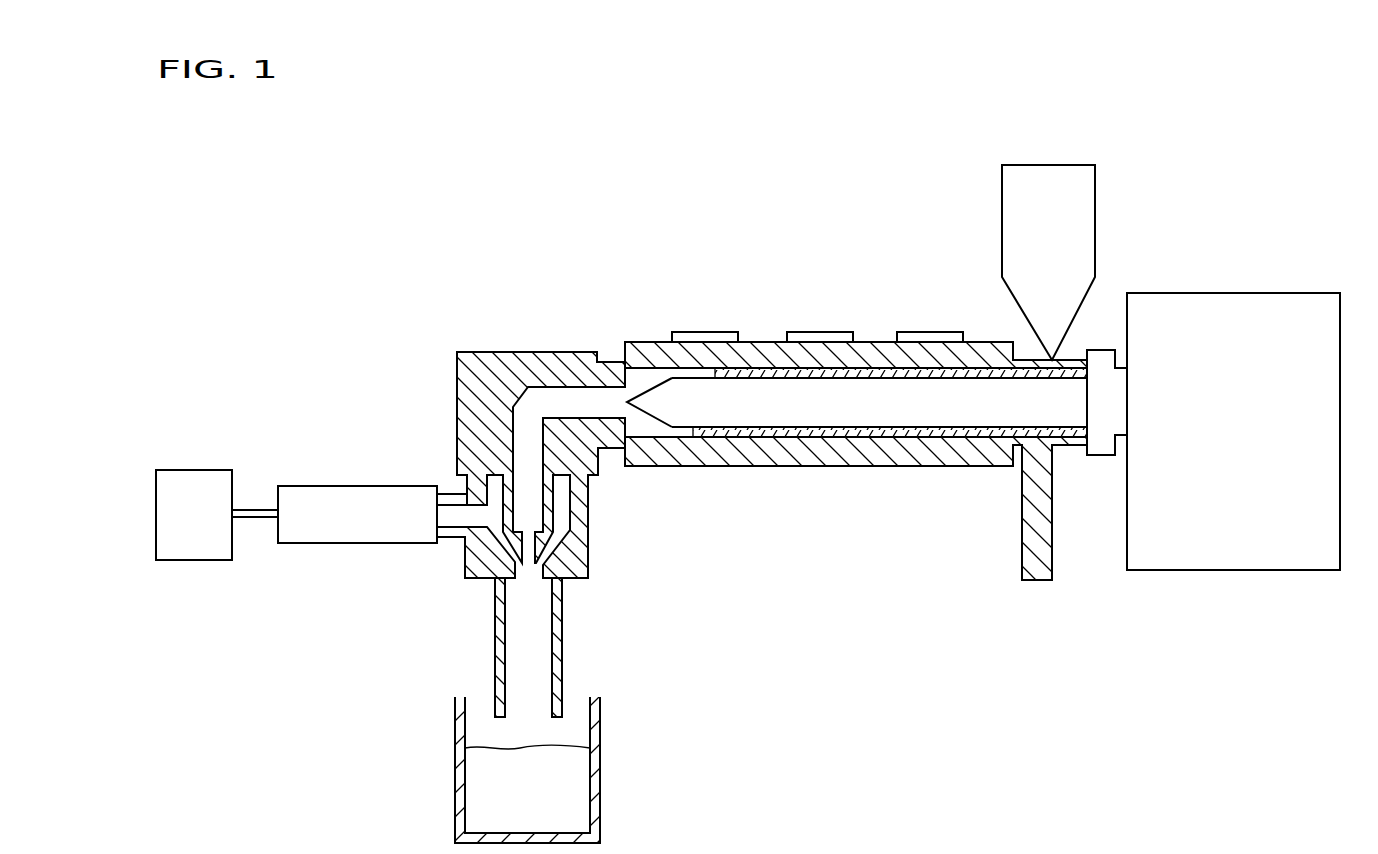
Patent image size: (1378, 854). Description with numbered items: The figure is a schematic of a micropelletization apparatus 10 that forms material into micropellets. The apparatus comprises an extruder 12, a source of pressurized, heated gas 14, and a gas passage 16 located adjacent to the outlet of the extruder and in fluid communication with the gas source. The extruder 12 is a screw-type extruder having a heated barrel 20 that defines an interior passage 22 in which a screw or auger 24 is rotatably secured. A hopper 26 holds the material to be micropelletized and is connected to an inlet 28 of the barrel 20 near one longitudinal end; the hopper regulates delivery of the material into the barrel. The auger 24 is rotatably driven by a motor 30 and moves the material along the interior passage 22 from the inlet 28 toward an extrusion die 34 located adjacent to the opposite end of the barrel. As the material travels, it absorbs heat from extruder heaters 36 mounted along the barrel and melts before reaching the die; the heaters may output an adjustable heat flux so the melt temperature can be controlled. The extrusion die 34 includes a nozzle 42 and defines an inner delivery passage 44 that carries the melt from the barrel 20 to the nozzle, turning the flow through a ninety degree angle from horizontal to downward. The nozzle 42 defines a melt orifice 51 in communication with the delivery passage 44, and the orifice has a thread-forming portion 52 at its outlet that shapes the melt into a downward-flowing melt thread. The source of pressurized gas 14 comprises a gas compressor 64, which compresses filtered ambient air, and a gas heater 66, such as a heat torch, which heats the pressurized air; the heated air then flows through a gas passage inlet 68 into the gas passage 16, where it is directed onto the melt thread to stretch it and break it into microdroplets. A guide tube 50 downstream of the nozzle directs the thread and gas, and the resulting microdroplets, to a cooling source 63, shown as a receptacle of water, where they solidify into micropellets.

The micropelletization apparatus 10 is at (1074, 118).
The extruder 12 is at (828, 236).
The source of pressurized, heated gas 14 is at (274, 440).
The gas passage 16 is at (480, 578).
The heated barrel 20 is at (814, 448).
The interior passage 22 is at (644, 428).
The screw or auger 24 is at (900, 402).
The hopper 26 is at (1097, 184).
The inlet 28 is at (1052, 360).
The motor 30 is at (1222, 543).
The extrusion die 34 is at (448, 380).
The extruder heaters 36 is at (706, 330).
The nozzle 42 is at (605, 475).
The inner delivery passage 44 is at (558, 396).
The guide tube 50 is at (564, 652).
The melt orifice 51 is at (535, 498).
The thread-forming portion 52 is at (556, 545).
The cooling source 63 is at (596, 766).
The gas compressor 64 is at (205, 538).
The gas heater 66 is at (368, 528).
The gas passage inlet 68 is at (448, 528).